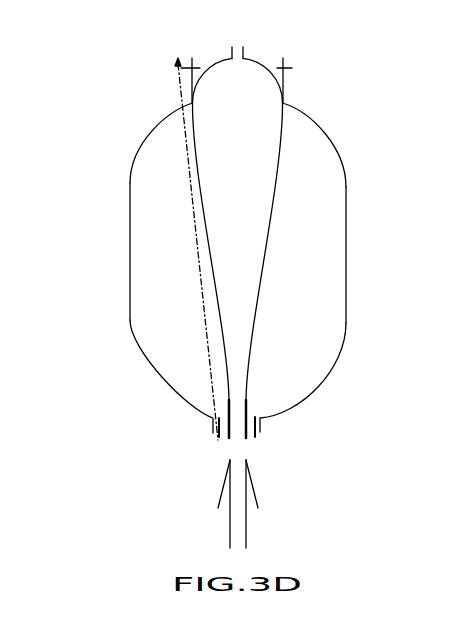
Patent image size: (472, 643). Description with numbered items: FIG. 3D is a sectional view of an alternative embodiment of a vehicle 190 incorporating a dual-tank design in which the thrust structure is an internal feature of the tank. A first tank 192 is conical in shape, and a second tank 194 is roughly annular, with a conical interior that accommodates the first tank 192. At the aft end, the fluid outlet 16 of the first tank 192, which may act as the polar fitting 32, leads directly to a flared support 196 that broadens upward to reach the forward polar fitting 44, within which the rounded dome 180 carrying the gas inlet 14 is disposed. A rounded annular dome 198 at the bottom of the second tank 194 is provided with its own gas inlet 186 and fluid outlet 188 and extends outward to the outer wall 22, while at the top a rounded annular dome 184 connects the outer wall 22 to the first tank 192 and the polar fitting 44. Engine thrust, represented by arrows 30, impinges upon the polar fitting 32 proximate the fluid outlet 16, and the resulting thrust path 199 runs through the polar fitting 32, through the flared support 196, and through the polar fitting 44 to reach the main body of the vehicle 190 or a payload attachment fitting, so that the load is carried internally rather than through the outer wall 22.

The gas inlet 14 is at (244, 47).
The fluid outlet 16 is at (246, 440).
The outer wall 22 is at (347, 243).
The engine thrust 30 is at (247, 525).
The polar fitting 32 is at (229, 438).
The polar fitting 44 is at (287, 63).
The rounded dome 180 is at (214, 62).
The rounded annular dome 184 is at (133, 160).
The gas inlet 186 is at (262, 440).
The fluid outlet 188 is at (212, 441).
The vehicle 190 is at (130, 72).
The first tank 192 is at (256, 97).
The second tank 194 is at (320, 160).
The flared support 196 is at (265, 258).
The rounded annular dome 198 is at (313, 391).
The thrust path 199 is at (197, 260).